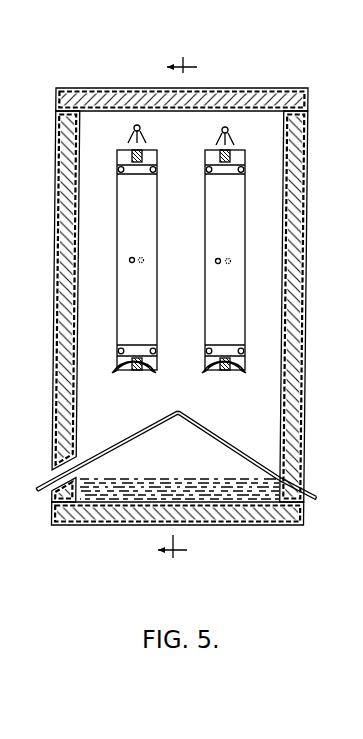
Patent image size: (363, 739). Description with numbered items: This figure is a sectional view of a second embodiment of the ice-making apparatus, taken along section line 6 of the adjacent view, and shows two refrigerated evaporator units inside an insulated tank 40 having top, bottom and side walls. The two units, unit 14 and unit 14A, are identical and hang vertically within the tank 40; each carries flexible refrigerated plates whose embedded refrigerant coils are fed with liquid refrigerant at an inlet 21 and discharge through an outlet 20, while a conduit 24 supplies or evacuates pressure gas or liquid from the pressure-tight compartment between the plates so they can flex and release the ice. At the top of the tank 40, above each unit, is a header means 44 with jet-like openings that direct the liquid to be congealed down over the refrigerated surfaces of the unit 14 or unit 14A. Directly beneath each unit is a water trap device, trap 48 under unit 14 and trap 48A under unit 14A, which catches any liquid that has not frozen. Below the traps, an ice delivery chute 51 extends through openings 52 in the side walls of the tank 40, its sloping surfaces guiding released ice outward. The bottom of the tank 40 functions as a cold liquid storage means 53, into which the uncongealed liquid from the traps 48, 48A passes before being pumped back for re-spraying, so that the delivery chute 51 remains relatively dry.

The section line 6- 6 is at (177, 311).
The insulated tank 40 is at (54, 163).
The header means 44 is at (141, 129).
The unit 14 is at (140, 307).
The unit 14A is at (230, 309).
The outlet 20 is at (120, 171).
The inlet 21 is at (117, 351).
The conduit 24 is at (129, 260).
The water trap device 48 is at (157, 382).
The water trap device 48A is at (238, 383).
The ice delivery chute 51 is at (116, 446).
The opening 52 is at (62, 467).
The cold liquid storage means 53 is at (242, 491).